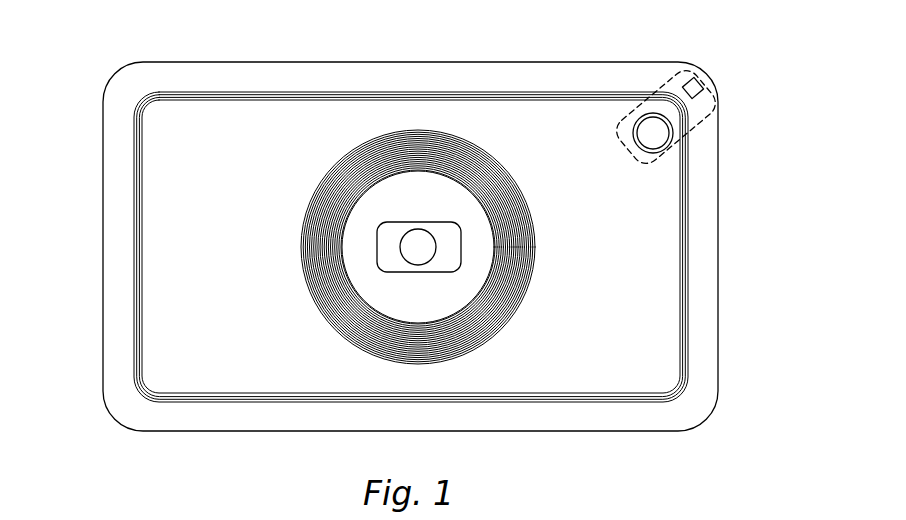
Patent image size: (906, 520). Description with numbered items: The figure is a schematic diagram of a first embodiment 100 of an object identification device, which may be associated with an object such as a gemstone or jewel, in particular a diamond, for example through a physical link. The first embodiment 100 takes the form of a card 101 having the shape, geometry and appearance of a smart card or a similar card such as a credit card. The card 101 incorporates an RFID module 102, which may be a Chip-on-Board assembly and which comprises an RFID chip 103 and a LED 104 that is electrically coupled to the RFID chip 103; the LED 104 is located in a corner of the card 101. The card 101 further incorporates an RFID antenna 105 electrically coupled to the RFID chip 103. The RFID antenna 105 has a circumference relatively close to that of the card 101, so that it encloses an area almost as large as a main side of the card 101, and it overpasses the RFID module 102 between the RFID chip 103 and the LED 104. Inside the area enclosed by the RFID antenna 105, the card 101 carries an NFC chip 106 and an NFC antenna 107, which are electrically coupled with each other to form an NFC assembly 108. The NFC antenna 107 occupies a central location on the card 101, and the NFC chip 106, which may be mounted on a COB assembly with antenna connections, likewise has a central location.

The first embodiment of an object identification device 100 is at (75, 42).
The card 101 is at (118, 163).
The RFID module 102 is at (703, 135).
The RFID chip 103 is at (657, 138).
The LED 104 is at (703, 84).
The RFID antenna 105 is at (683, 302).
The NFC chip 106 is at (415, 252).
The NFC antenna 107 is at (316, 281).
The NFC assembly 108 is at (297, 250).